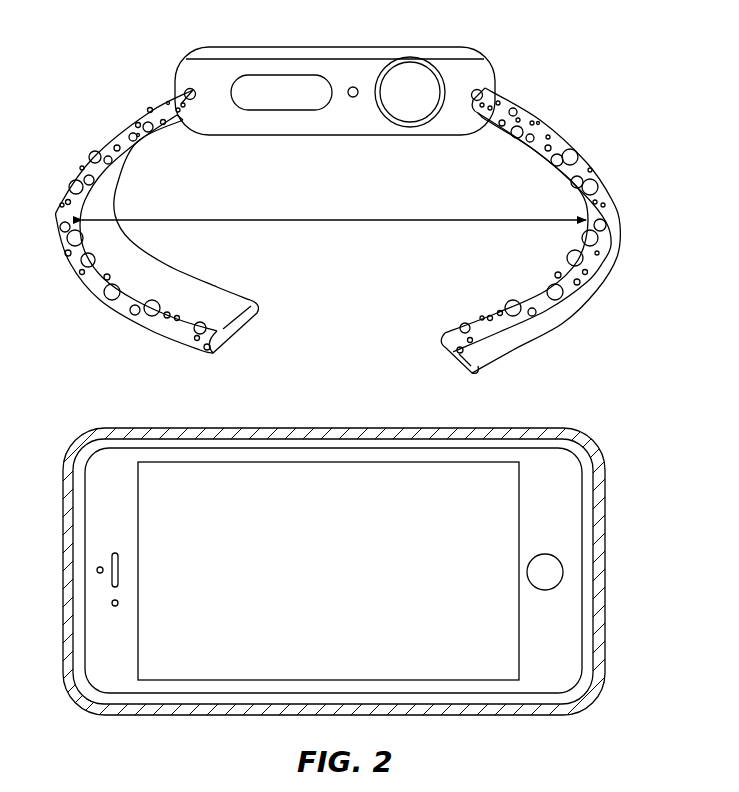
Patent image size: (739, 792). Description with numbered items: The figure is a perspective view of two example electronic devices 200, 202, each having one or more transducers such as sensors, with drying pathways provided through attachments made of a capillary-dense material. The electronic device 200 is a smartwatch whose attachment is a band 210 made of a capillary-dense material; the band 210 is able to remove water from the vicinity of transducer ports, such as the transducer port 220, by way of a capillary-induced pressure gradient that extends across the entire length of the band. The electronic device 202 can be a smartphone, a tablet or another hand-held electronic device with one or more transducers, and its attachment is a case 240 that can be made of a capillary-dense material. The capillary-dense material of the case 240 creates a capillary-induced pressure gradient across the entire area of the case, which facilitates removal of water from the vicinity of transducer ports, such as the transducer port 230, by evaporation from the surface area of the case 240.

The electronic device 200 is at (52, 88).
The band 210 is at (335, 220).
The transducer port 220 is at (494, 98).
The electronic device 202 is at (25, 436).
The transducer port 230 is at (80, 630).
The case 240 is at (590, 449).